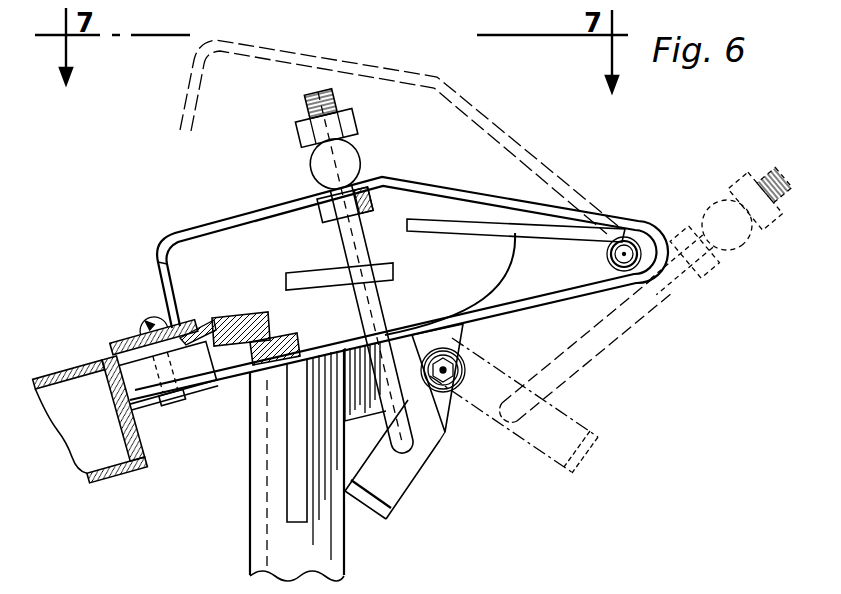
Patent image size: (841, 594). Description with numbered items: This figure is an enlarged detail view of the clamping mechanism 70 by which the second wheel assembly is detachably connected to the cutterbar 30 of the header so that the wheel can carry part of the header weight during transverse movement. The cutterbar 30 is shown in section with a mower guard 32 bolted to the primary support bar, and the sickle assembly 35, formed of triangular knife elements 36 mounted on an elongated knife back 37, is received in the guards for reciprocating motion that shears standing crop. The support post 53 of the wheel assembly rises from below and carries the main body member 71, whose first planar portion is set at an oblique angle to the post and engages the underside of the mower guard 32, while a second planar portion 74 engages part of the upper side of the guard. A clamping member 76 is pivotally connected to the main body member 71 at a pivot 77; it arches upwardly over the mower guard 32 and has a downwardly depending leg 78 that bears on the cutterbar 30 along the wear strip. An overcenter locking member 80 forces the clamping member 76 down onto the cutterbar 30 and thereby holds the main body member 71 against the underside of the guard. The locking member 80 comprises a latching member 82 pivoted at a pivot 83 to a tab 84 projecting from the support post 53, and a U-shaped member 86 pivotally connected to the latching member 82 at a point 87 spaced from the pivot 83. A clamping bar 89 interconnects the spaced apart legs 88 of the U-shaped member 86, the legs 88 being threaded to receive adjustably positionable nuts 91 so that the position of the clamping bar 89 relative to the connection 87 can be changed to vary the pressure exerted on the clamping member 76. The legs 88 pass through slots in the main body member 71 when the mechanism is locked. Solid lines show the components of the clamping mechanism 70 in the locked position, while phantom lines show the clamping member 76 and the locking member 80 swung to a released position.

The cutterbar 30 is at (118, 214).
The mower guards 32 is at (482, 262).
The sickle assembly 35 is at (246, 280).
The knife elements 36 is at (290, 300).
The knife back 37 is at (232, 318).
The support post 53 is at (346, 565).
The clamping mechanism 70 is at (650, 152).
The main body member 71 is at (618, 300).
The second planar portion 74 is at (440, 205).
The clamping member 76 is at (490, 100).
The pivot 77 is at (612, 253).
The leg 78 is at (157, 262).
The overcenter locking member 80 is at (464, 460).
The latching member 82 is at (395, 518).
The pivot 83 is at (440, 405).
The tab 84 is at (350, 418).
The U-shaped member 86 is at (385, 306).
The point 87 is at (414, 460).
The legs 88 is at (304, 102).
The clamping bar 89 is at (358, 160).
The nuts 91 is at (298, 130).